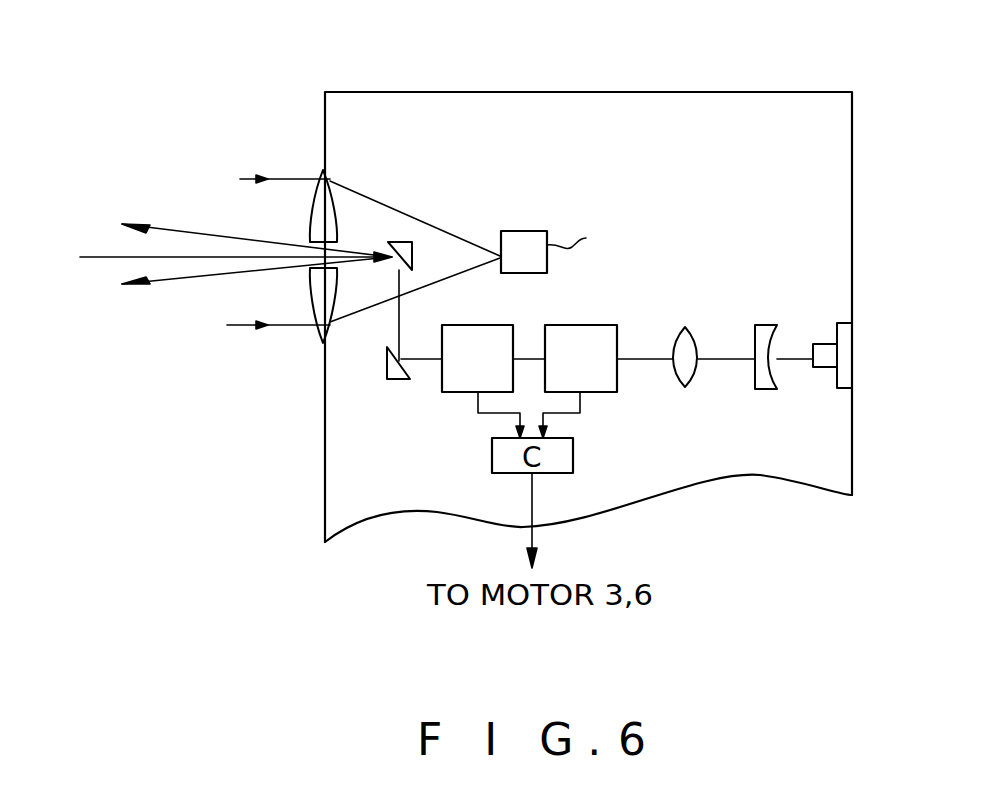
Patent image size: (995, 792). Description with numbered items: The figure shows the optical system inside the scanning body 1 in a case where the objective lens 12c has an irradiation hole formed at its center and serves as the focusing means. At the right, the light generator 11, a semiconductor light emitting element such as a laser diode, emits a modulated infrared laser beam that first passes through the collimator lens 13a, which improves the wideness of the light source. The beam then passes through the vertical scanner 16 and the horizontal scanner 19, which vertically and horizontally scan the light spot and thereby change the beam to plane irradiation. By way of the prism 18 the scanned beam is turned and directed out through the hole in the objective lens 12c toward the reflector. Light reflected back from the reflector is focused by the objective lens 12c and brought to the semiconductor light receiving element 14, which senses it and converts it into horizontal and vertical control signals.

The scanning body 1 is at (623, 88).
The objective lens 12c is at (322, 213).
The prism 18 is at (400, 240).
The semiconductor light receiving element 14 is at (518, 230).
The horizontal scanner 19 is at (462, 393).
The vertical scanner 16 is at (608, 393).
The collimator lens 13a is at (766, 325).
The light generator 11 is at (837, 335).